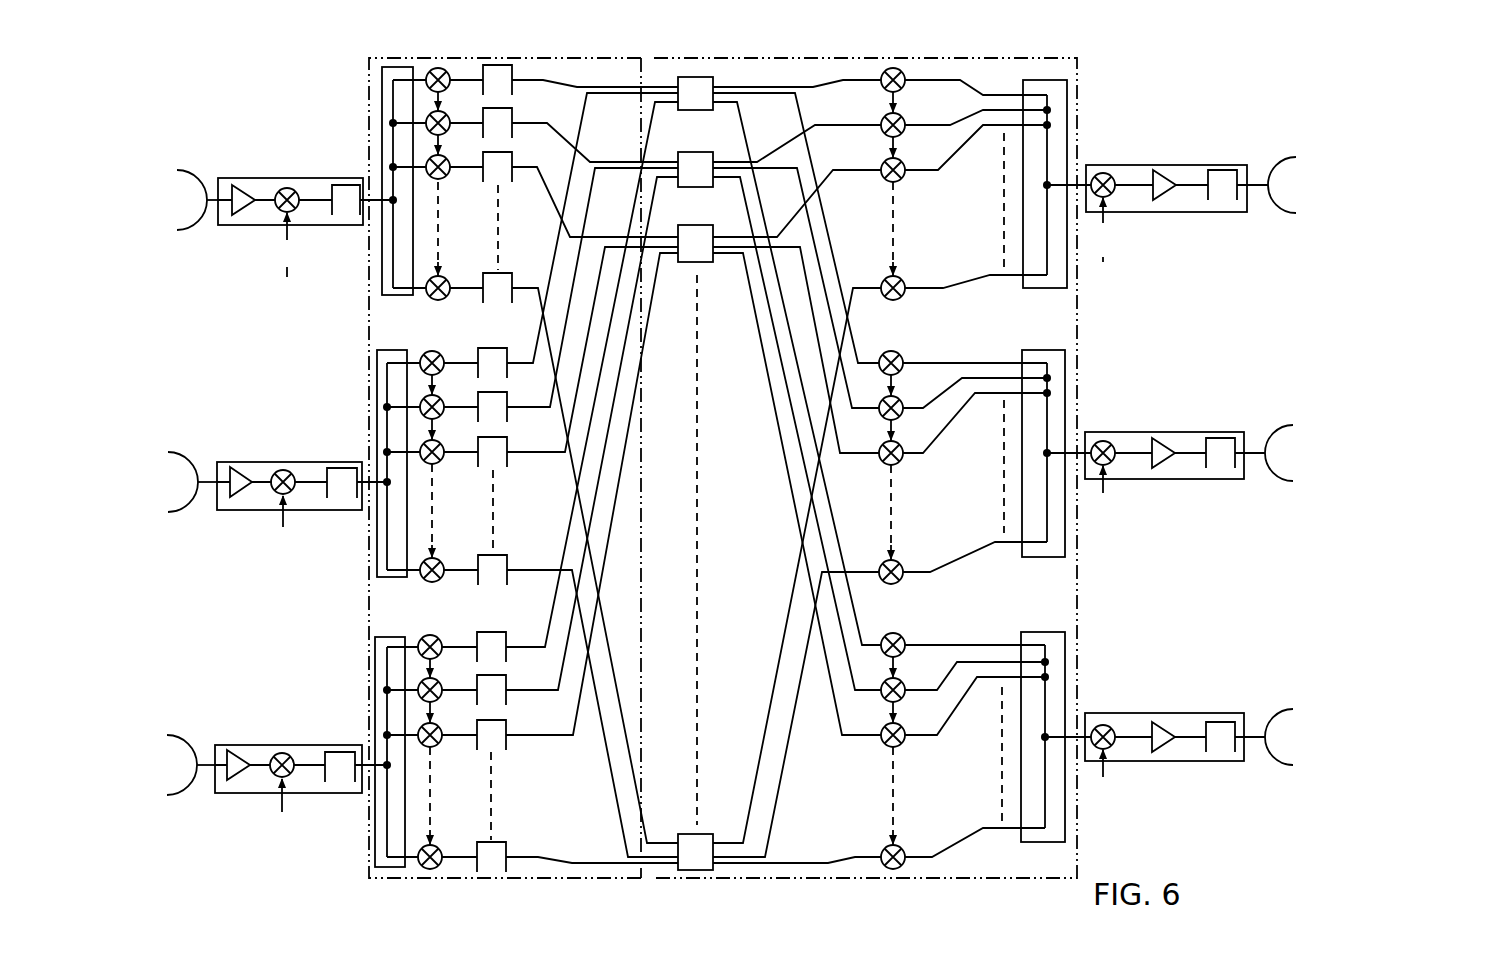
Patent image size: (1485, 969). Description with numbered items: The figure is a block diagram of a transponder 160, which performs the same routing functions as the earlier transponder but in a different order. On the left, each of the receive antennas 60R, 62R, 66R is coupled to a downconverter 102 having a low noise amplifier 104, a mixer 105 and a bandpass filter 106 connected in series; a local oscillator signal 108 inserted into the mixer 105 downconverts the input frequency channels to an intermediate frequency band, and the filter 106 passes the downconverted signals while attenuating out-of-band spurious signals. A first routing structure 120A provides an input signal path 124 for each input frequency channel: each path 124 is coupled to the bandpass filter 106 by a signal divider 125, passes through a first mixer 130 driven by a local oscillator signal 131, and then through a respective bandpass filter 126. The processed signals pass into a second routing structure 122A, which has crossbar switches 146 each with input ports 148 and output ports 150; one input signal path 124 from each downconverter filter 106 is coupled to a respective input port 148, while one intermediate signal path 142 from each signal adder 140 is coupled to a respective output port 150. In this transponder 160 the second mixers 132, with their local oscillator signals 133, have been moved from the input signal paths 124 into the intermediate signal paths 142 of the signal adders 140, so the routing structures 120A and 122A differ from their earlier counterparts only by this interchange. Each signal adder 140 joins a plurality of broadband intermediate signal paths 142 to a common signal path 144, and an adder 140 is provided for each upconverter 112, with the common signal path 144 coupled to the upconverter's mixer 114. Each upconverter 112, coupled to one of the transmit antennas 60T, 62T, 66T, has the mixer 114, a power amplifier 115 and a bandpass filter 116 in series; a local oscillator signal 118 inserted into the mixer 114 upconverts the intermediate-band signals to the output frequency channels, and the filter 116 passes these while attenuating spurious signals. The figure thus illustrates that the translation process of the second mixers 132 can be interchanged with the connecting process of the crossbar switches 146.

The receive antenna 60R is at (180, 168).
The receive antenna 62R is at (172, 455).
The receive antenna 66R is at (172, 737).
The transmit antenna 60T is at (1287, 157).
The transmit antenna 62T is at (1278, 425).
The transmit antenna 66T is at (1278, 710).
The downconverter 102 is at (306, 436).
The low noise amplifier 104 is at (237, 182).
The mixer 105 is at (288, 185).
The bandpass filter 106 is at (343, 182).
The local oscillator signal 108 is at (283, 244).
The upconverter 112 is at (1176, 412).
The mixer 114 is at (1105, 172).
The power amplifier 115 is at (1160, 170).
The bandpass filter 116 is at (1220, 170).
The local oscillator signal 118 is at (1108, 229).
The first routing structure 120A is at (362, 289).
The second routing structure 122A is at (1084, 290).
The input signal path 124 is at (543, 58).
The signal divider 125 is at (382, 94).
The bandpass filter 126 is at (490, 64).
The first mixer 130 is at (380, 66).
The local oscillator signal 131 is at (438, 68).
The second mixer 132 is at (905, 72).
The local oscillator signal 133 is at (893, 68).
The signal adder 140 is at (1042, 80).
The intermediate signal path 142 is at (1022, 82).
The common signal path 144 is at (1078, 130).
The crossbar switch 146 is at (695, 77).
The input port 148 is at (645, 58).
The output port 150 is at (740, 60).
The transponder 160 is at (1275, 258).